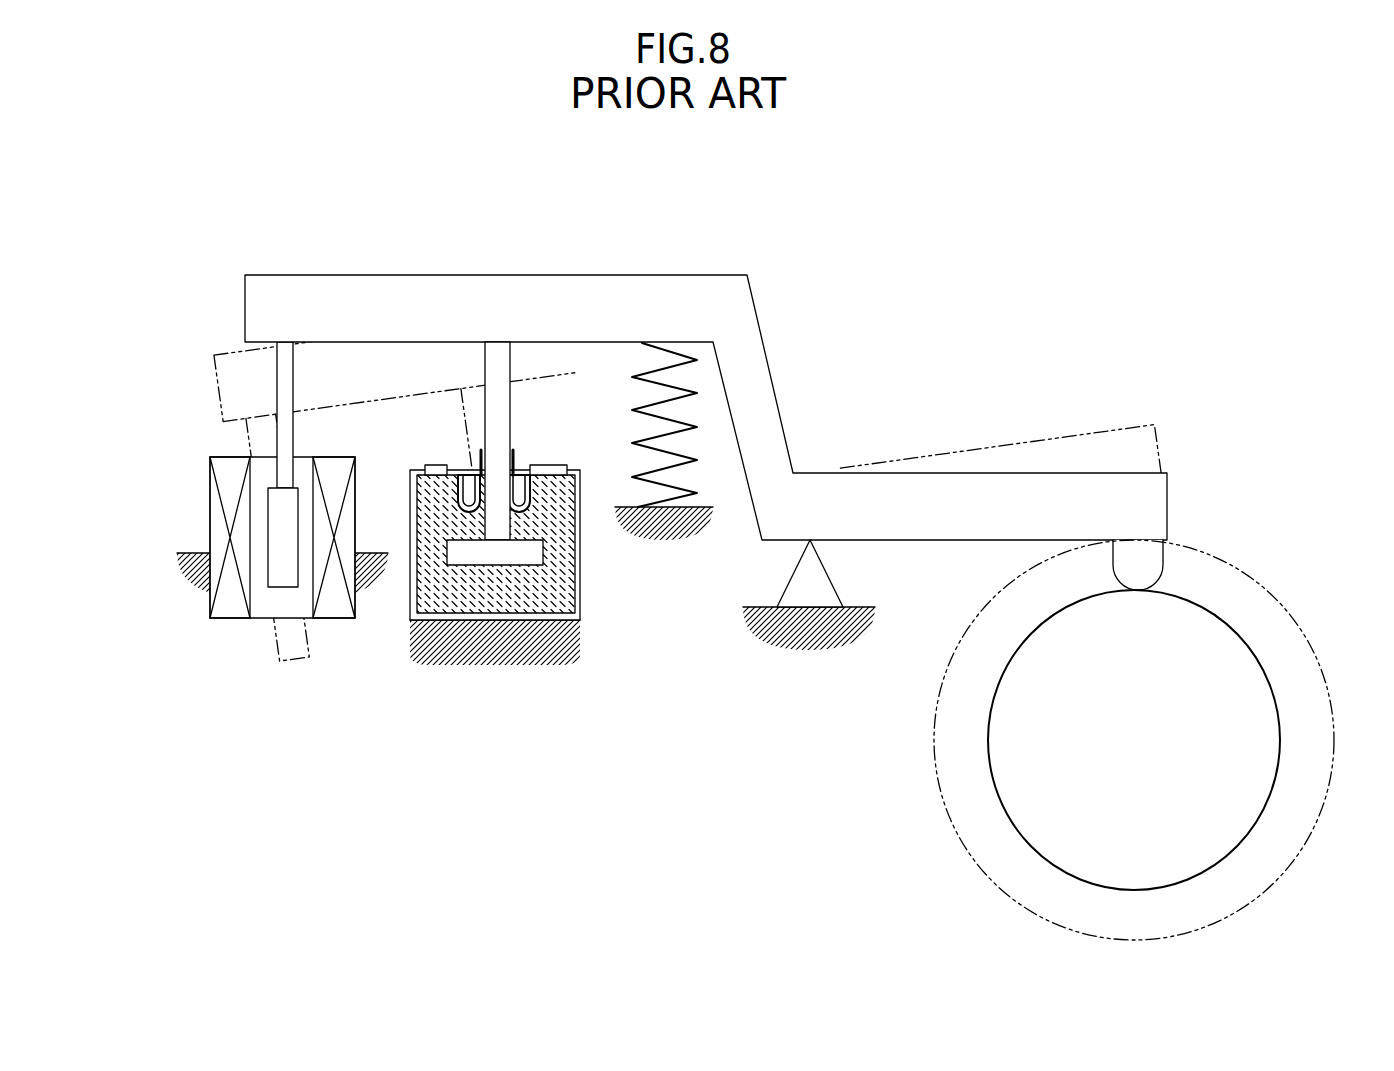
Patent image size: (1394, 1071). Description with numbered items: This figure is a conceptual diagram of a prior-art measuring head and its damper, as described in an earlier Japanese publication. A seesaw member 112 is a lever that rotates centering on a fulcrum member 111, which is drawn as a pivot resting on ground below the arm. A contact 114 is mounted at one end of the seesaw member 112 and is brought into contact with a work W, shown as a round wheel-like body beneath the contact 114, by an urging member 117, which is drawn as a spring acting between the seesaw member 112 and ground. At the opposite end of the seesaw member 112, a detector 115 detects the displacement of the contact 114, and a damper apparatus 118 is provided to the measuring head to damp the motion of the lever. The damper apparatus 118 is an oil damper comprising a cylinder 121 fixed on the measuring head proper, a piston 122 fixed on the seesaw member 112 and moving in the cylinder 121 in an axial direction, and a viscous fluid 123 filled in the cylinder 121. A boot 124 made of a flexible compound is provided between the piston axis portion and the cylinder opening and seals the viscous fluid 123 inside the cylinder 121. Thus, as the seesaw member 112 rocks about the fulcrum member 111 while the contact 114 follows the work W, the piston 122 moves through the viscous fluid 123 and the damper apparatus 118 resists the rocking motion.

The fulcrum member 111 is at (823, 587).
The seesaw member 112 is at (712, 295).
The contact 114 is at (1162, 528).
The detector 115 is at (200, 472).
The urging member 117 is at (686, 420).
The damper apparatus 118 is at (538, 668).
The cylinder 121 is at (578, 573).
The piston 122 is at (455, 553).
The viscous fluid 123 is at (436, 608).
The boot 124 is at (511, 465).
The work W is at (1260, 748).